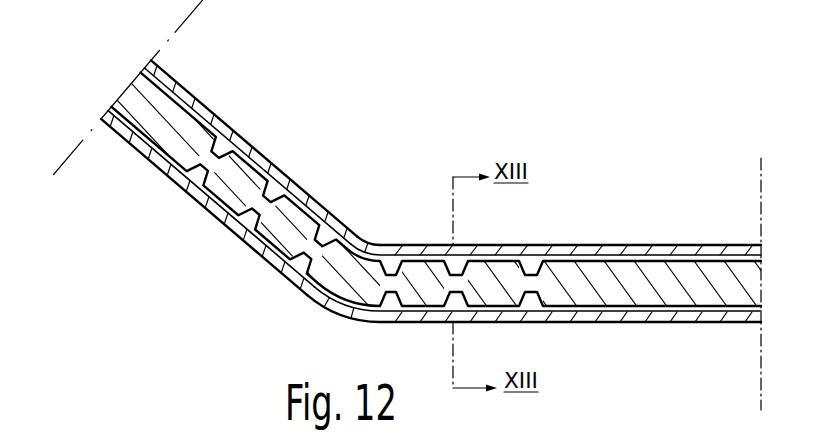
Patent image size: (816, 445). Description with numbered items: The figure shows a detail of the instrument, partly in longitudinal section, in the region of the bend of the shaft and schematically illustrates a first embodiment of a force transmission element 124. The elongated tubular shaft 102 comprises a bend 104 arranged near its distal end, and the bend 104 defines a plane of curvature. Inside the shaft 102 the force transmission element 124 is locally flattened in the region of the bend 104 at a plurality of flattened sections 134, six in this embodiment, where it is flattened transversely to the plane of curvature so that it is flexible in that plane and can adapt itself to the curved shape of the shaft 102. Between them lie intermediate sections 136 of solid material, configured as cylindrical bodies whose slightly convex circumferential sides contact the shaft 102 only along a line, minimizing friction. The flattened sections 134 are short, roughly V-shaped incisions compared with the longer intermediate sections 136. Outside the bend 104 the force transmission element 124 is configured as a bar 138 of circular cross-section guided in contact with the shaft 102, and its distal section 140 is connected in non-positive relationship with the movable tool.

The shaft 102 is at (628, 324).
The bend 104 is at (369, 212).
The force transmission element 124 is at (632, 273).
The flattened sections 134 is at (212, 168).
The intermediate sections 136 is at (241, 192).
The bar 138 is at (732, 298).
The distal section 140 is at (146, 101).